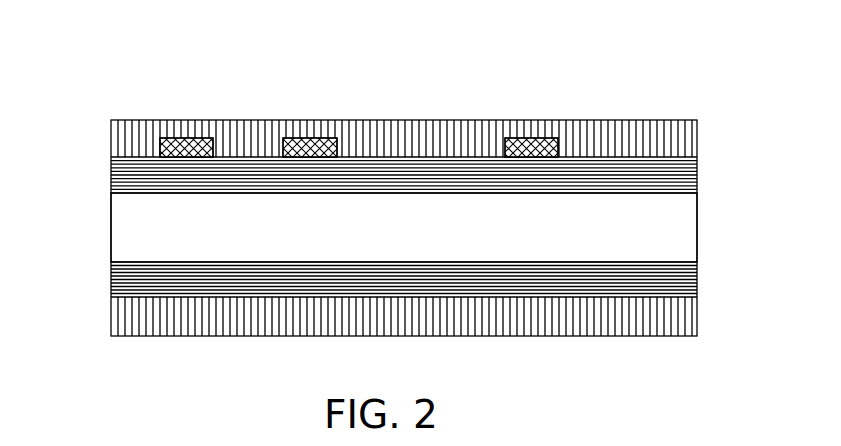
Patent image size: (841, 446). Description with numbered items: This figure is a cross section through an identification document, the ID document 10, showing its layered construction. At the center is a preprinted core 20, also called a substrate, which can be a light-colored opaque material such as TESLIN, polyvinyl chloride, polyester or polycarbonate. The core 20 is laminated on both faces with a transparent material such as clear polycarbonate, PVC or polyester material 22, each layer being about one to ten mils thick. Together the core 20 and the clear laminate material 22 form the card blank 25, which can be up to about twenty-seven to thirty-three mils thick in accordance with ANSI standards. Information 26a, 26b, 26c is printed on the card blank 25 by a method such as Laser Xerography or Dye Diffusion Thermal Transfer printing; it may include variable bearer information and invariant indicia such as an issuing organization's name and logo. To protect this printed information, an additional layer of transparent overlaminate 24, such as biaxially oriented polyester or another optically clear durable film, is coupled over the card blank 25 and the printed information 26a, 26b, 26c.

The ID document 10 is at (84, 132).
The core 20 is at (698, 227).
The clear laminate material 22 is at (697, 163).
The transparent overlaminate 24 is at (640, 122).
The card blank 25 is at (393, 247).
The information 26a is at (190, 138).
The information 26b is at (313, 139).
The information 26c is at (532, 138).